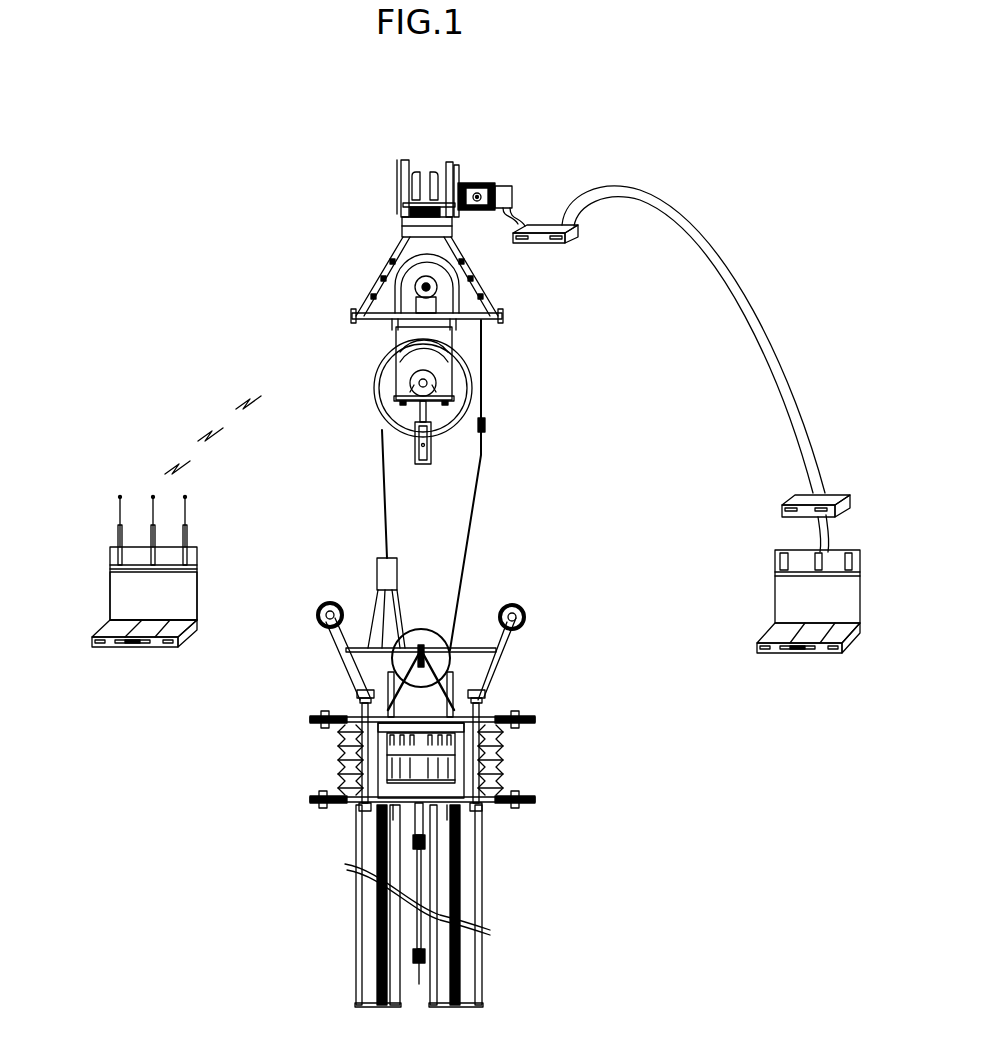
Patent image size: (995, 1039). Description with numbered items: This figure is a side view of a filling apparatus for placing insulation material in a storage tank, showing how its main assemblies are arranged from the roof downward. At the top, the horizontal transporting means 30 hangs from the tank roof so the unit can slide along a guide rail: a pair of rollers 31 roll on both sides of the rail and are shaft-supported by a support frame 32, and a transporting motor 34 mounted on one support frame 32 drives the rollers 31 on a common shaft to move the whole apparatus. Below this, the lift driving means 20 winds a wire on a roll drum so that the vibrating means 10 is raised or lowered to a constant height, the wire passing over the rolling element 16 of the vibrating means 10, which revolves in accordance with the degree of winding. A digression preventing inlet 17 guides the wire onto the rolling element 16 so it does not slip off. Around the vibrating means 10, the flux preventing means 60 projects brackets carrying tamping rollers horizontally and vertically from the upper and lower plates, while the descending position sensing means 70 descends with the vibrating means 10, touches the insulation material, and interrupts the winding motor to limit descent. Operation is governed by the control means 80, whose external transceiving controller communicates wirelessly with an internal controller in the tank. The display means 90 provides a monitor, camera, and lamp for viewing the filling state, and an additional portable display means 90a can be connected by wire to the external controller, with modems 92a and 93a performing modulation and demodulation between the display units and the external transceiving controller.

The vibrating means 10 is at (556, 748).
The rolling element 16 is at (424, 628).
The digression preventing inlet 17 is at (378, 572).
The lift driving means 20 is at (518, 378).
The horizontal transporting means 30 is at (444, 211).
The rollers 31 is at (418, 164).
The support frame 32 is at (402, 201).
The transporting motor 34 is at (506, 204).
The flux preventing means 60 is at (520, 616).
The descending position sensing means 70 is at (420, 883).
The control means 80 is at (115, 630).
The display means 90 is at (172, 590).
The additional display means 90a is at (785, 594).
The modem 92a is at (792, 498).
The modem 93a is at (578, 224).